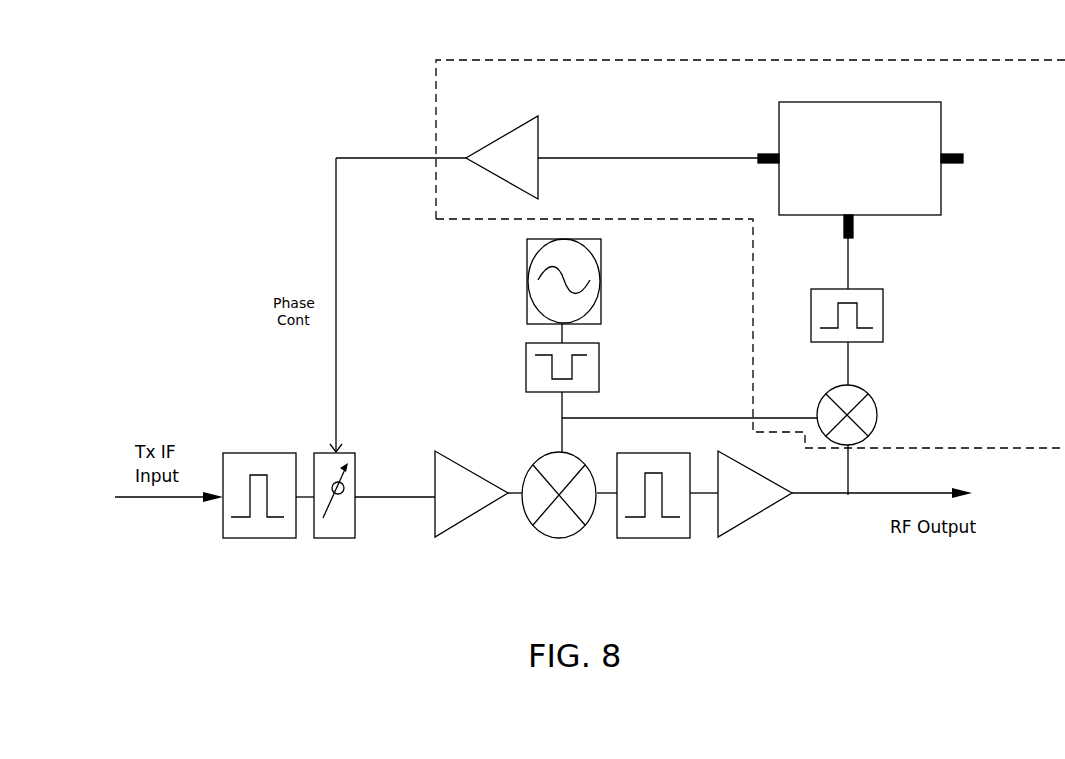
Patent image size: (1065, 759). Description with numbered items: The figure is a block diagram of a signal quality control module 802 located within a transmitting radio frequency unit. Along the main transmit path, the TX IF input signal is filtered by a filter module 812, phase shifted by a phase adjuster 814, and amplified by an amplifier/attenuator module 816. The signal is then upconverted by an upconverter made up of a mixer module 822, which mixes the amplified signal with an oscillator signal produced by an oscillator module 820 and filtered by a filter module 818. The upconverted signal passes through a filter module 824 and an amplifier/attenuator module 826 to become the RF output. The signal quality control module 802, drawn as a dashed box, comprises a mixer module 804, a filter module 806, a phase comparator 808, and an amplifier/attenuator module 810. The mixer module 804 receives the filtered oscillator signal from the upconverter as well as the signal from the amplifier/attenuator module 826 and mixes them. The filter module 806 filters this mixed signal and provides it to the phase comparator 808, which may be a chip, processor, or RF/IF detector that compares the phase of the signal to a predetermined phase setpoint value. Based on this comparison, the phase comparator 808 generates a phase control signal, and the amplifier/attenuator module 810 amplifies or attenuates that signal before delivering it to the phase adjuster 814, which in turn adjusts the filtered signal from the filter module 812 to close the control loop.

The signal quality control module 802 is at (733, 60).
The mixer module 804 is at (877, 412).
The filter module 806 is at (883, 316).
The phase comparator 808 is at (941, 215).
The amplifier/attenuator module 810 is at (538, 116).
The filter module 812 is at (238, 537).
The phase adjuster 814 is at (338, 538).
The amplifier/attenuator module 816 is at (435, 537).
The filter module 818 is at (599, 385).
The oscillator module 820 is at (601, 317).
The mixer module 822 is at (542, 535).
The filter module 824 is at (643, 538).
The amplifier/attenuator module 826 is at (725, 530).